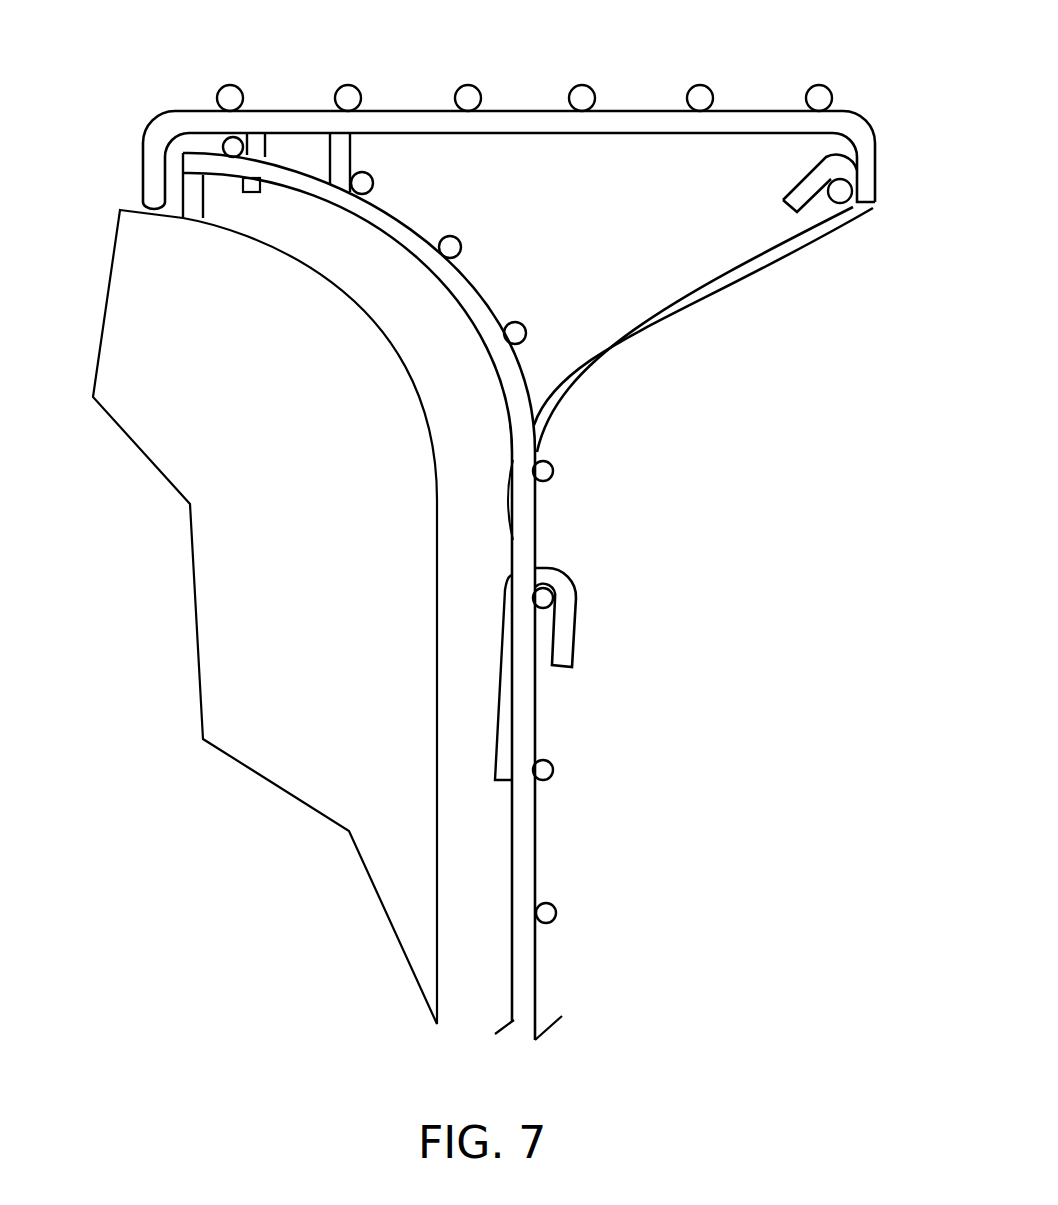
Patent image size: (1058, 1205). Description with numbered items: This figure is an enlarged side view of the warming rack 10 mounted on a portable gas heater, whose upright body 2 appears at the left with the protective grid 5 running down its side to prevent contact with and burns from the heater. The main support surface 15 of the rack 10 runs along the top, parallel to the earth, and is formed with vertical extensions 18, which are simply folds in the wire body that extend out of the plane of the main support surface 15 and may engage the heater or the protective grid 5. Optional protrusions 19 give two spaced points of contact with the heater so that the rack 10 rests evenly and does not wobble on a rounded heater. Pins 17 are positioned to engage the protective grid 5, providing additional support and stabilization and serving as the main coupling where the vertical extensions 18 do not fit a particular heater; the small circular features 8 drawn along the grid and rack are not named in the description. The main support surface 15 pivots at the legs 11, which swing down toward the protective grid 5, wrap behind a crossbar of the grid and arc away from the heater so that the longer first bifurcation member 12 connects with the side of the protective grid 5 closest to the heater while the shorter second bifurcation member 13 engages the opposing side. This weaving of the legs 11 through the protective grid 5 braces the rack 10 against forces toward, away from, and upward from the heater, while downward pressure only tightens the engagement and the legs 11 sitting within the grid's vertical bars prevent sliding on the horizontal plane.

The upright body 2 is at (283, 468).
The protective grid 5 is at (503, 367).
The fasteners 8 is at (526, 333).
The warming rack 10 is at (805, 60).
The legs 11 is at (677, 312).
The first bifurcation member 12 is at (507, 732).
The second bifurcation member 13 is at (570, 645).
The main support surface 15 is at (508, 122).
The pins 17 is at (348, 160).
The vertical extensions 18 is at (143, 165).
The protrusions 19 is at (143, 205).